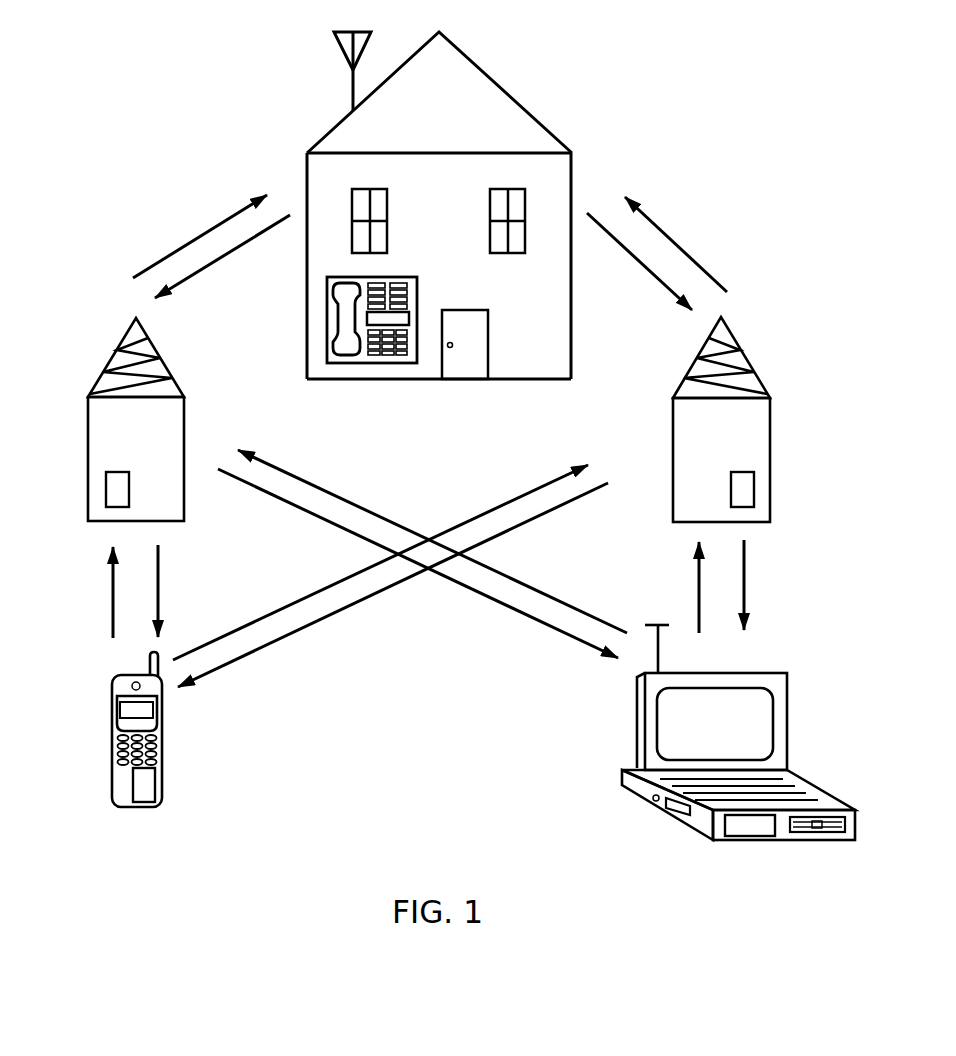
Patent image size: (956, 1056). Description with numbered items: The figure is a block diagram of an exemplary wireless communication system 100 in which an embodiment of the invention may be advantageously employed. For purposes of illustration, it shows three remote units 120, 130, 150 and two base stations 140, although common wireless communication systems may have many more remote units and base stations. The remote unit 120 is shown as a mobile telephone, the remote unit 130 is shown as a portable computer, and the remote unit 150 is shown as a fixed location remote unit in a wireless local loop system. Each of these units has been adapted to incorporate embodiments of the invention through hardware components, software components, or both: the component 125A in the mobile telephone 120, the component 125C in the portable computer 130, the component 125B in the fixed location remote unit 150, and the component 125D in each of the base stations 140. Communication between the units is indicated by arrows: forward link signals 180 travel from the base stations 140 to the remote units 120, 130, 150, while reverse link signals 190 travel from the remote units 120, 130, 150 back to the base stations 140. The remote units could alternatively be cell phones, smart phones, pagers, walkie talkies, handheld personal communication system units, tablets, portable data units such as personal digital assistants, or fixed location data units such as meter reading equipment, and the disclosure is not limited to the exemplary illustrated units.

The wireless communication system 100 is at (115, 40).
The remote unit 120 is at (107, 752).
The component 125A is at (145, 790).
The component 125B is at (396, 367).
The component 125C is at (757, 825).
The component 125D is at (106, 490).
The remote unit 130 is at (738, 756).
The base station 140 is at (117, 355).
The remote unit 150 is at (344, 349).
The forward link signals 180 is at (204, 230).
The reverse link signals 190 is at (206, 268).